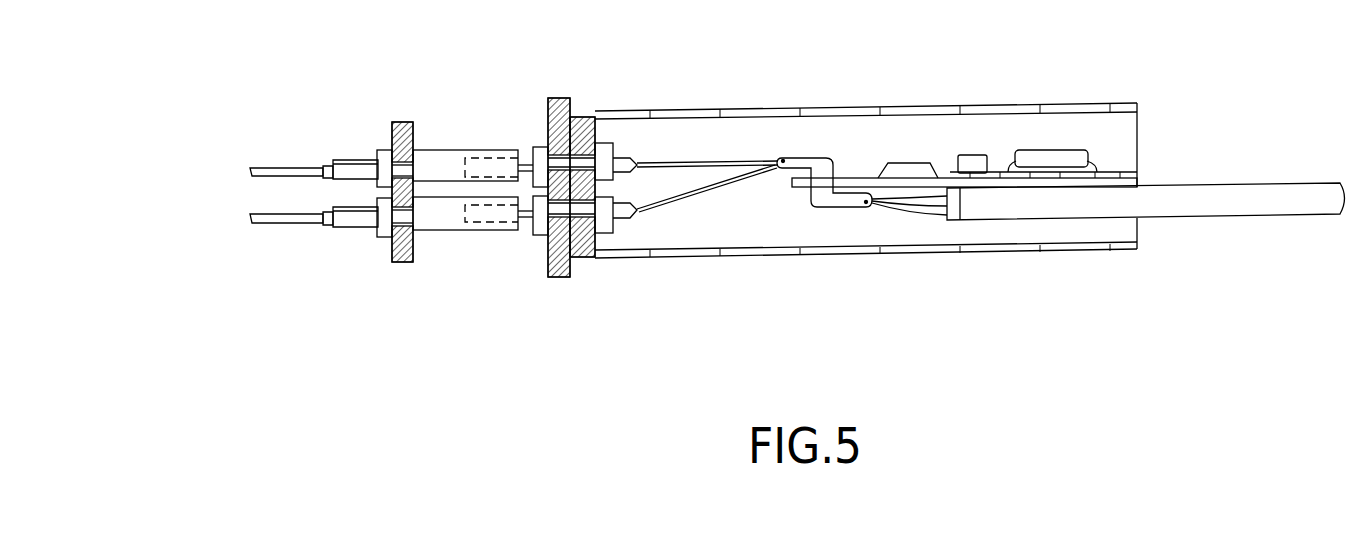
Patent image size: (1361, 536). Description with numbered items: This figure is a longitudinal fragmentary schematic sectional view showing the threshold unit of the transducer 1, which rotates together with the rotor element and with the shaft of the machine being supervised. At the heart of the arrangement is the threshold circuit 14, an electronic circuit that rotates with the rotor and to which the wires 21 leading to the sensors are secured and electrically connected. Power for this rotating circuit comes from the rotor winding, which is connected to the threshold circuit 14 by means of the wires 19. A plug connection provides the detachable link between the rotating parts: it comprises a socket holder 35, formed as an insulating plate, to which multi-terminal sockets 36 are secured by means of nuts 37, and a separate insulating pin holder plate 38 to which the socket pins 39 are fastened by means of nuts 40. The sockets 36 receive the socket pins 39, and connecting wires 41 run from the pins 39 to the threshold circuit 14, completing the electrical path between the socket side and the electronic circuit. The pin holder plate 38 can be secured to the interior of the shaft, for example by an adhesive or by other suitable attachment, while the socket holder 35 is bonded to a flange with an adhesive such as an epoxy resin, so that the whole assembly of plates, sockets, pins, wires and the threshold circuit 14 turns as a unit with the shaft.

The transducer 1 is at (751, 233).
The threshold circuit 14 is at (950, 178).
The wires 19 is at (304, 217).
The wires 21 is at (1255, 207).
The socket holder 35 is at (398, 125).
The multi-terminal sockets 36 is at (451, 217).
The nuts 37 is at (388, 168).
The insulating pin holder plate 38 is at (583, 118).
The socket pins 39 is at (530, 168).
The nuts 40 is at (634, 160).
The connecting wires 41 is at (685, 161).